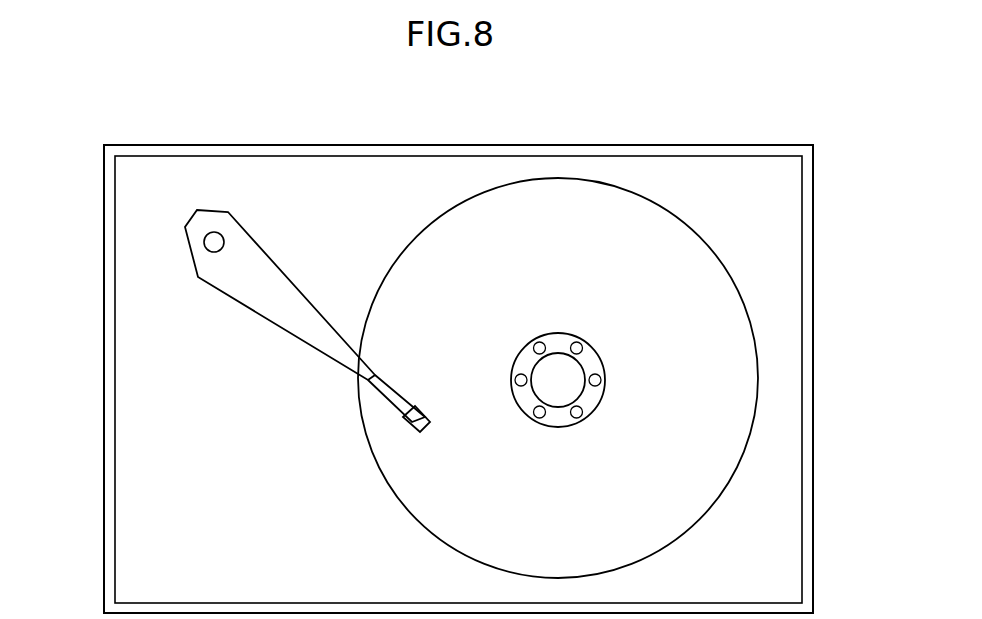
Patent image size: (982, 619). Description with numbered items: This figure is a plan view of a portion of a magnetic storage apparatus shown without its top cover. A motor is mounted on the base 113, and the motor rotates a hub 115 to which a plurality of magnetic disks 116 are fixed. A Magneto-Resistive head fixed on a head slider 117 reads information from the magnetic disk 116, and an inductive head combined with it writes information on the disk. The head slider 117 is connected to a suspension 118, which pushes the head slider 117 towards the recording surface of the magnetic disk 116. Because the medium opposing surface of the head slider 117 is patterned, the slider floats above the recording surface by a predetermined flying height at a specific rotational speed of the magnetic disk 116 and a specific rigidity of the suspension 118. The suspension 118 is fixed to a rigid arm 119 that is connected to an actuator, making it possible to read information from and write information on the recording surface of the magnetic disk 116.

The base 113 is at (822, 533).
The hub 115 is at (567, 380).
The magnetic disk 116 is at (668, 225).
The head slider 117 is at (428, 417).
The suspension 118 is at (388, 392).
The rigid arm 119 is at (267, 293).